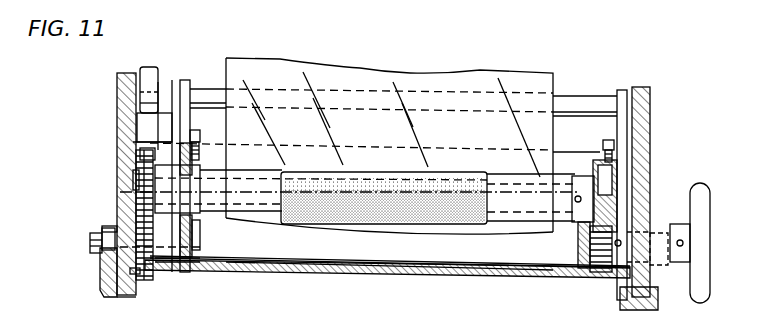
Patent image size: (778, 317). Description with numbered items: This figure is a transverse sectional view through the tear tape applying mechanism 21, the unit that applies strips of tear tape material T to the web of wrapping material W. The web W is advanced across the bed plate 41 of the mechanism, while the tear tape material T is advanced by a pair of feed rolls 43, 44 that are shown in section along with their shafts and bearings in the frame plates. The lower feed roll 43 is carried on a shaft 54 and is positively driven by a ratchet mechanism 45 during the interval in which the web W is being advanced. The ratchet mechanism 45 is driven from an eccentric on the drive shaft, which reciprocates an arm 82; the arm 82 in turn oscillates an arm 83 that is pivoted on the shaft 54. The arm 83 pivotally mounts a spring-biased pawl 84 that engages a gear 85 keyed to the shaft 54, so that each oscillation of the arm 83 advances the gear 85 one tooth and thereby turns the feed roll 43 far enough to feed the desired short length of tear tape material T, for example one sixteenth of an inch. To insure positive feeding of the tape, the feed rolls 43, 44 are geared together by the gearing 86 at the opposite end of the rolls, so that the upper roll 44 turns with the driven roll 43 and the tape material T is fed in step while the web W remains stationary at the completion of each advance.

The arm 82 is at (157, 78).
The arm 83 is at (162, 133).
The spring-biased pawl 84 is at (143, 171).
The ratchet mechanism 45 is at (135, 178).
The shaft 54 is at (112, 222).
The gear 85 is at (139, 275).
The bed plate 41 is at (255, 273).
The wrapping material web W is at (350, 268).
The feed roll 43 is at (420, 256).
The feed roll 44 is at (453, 178).
The tear tape material T is at (537, 84).
The tear tape applying mechanism 21 is at (673, 88).
The gearing 86 is at (625, 230).